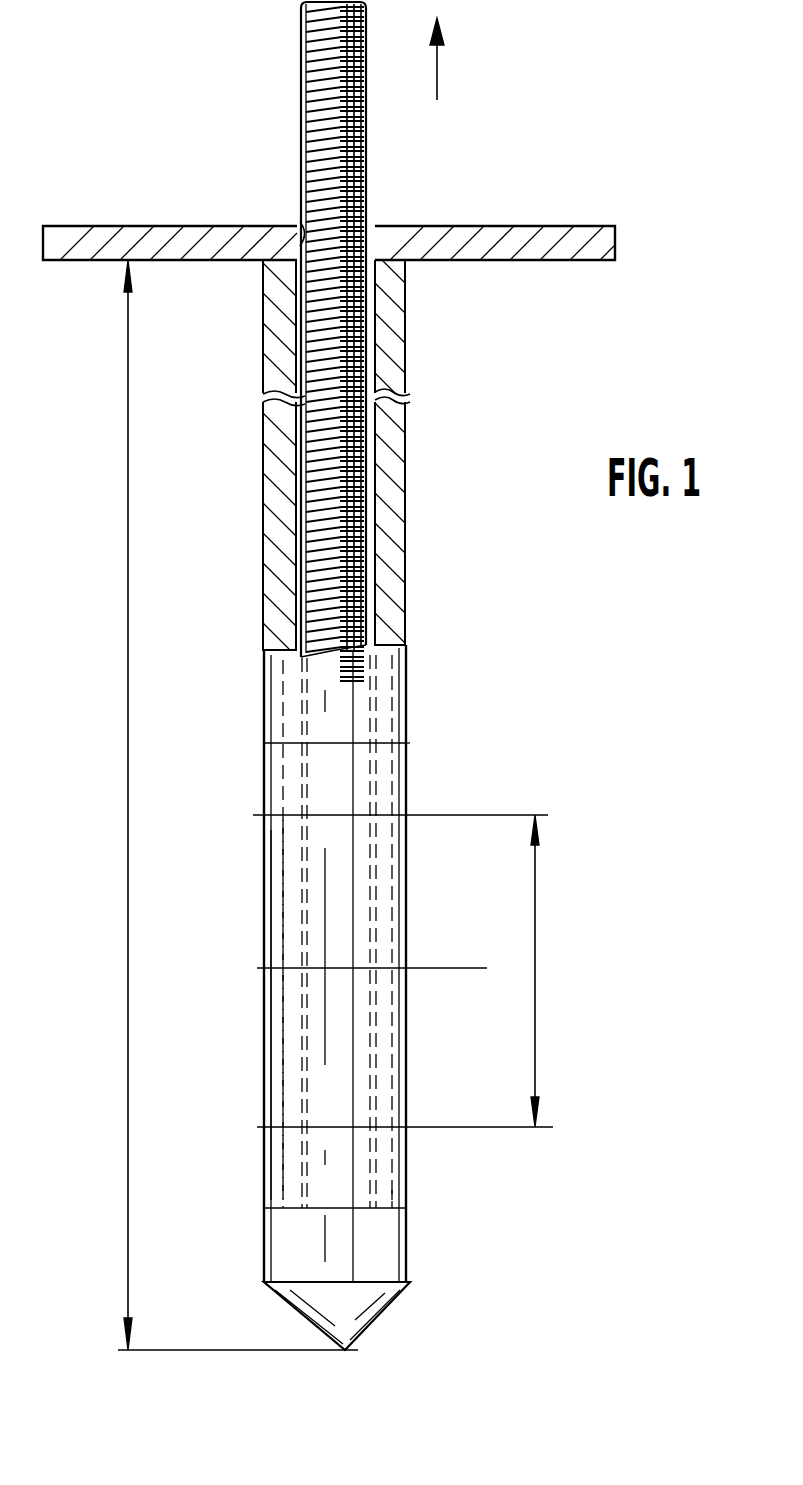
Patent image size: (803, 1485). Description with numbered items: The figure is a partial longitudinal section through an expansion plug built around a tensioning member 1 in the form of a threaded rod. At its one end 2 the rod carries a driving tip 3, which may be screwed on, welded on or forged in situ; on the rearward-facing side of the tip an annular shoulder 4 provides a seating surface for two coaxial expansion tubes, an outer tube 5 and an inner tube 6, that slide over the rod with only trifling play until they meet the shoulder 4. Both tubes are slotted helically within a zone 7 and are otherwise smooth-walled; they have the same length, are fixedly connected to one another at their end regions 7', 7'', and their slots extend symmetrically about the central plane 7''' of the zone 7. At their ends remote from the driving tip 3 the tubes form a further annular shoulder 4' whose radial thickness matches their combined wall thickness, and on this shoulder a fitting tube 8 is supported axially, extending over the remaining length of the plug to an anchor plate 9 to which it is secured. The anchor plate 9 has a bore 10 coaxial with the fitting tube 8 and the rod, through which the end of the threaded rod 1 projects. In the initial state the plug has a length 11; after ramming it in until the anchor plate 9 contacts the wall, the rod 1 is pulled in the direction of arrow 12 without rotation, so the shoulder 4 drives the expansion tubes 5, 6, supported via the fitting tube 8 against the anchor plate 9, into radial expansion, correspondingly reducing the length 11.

The tensioning member 1 is at (302, 78).
The end of the threaded rod 2 is at (456, 1258).
The driving tip 3 is at (276, 1268).
The annular shoulder 4 is at (306, 1198).
The annular shoulder 4' is at (304, 715).
The outer expansion tube 5 is at (276, 1027).
The inner expansion tube 6 is at (286, 903).
The zone 7 is at (417, 971).
The end region 7' is at (437, 746).
The end region 7'' is at (437, 1200).
The central plane 7''' is at (379, 939).
The fitting tube 8 is at (398, 512).
The anchor plate 9 is at (513, 248).
The bore 10 is at (302, 218).
The length 11 is at (128, 797).
The arrow 12 is at (439, 75).